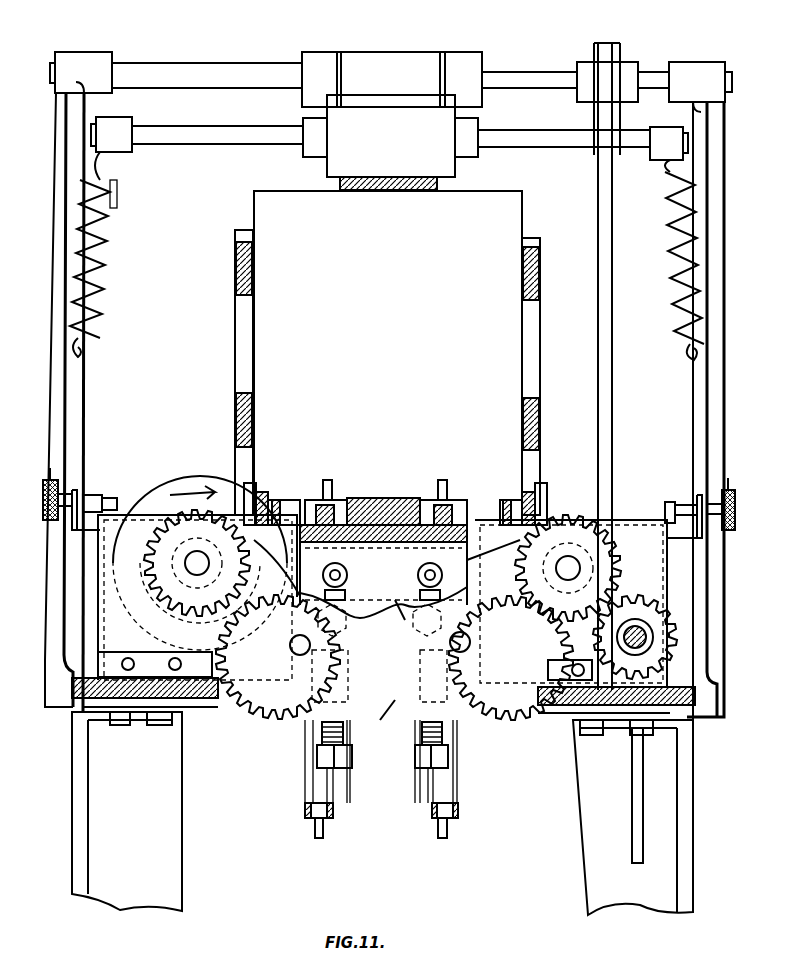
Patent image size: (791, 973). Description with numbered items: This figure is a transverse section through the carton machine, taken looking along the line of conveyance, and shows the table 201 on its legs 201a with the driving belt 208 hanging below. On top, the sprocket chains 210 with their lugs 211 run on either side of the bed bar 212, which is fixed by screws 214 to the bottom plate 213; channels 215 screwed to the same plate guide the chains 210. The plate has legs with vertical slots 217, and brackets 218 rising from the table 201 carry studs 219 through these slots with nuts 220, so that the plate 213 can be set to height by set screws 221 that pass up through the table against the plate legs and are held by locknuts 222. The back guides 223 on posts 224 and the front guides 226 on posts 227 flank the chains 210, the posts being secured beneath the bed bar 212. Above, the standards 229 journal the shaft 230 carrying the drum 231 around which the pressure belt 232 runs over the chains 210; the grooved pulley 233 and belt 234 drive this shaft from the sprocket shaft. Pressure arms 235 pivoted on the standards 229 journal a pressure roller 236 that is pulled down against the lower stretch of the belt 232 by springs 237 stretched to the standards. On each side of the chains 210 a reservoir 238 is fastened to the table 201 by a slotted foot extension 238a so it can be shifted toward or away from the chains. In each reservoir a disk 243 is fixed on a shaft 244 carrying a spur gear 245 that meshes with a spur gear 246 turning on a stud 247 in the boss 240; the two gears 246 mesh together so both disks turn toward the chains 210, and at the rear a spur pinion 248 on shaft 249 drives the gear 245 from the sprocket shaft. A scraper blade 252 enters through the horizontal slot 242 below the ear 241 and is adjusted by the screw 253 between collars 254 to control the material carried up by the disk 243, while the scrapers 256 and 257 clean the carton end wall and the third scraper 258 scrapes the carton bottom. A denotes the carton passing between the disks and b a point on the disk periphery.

The table 201 is at (160, 730).
The legs 201a is at (178, 828).
The belt 208 is at (630, 790).
The sprocket chains 210 is at (325, 500).
The lugs 211 is at (330, 480).
The bed bar 212 is at (410, 495).
The bottom plate 213 is at (345, 578).
The screws 214 is at (400, 495).
The channels 215 is at (410, 500).
The vertical slots 217 is at (395, 622).
The brackets 218 is at (383, 712).
The studs 219 is at (380, 600).
The nuts 220 is at (470, 560).
The set screws 221 is at (320, 762).
The locknuts 222 is at (350, 735).
The back guides 223 is at (540, 262).
The posts 224 is at (537, 320).
The front guides 226 is at (236, 270).
The posts 227 is at (236, 305).
The standards 229 is at (85, 410).
The shaft 230 is at (165, 70).
The drum 231 is at (430, 55).
The pressure belt 232 is at (340, 183).
The grooved pulley 233 is at (590, 106).
The belt 234 is at (615, 338).
The pressure arm 235 is at (125, 124).
The pressure roller 236 is at (325, 152).
The springs 237 is at (100, 235).
The reservoirs 238 is at (98, 597).
The foot extensions 238a is at (190, 700).
The boss 240 is at (332, 640).
The ear 241 is at (100, 495).
The horizontal slot 242 is at (70, 538).
The disk 243 is at (170, 480).
The shaft 244 is at (192, 568).
The spur gear 245 is at (158, 605).
The spur gear 246 is at (278, 735).
The stud 247 is at (293, 650).
The spur pinion 248 is at (675, 622).
The shaft 249 is at (650, 640).
The scraper blade 252 is at (118, 495).
The adjusting screw 253 is at (43, 500).
The collars 254 is at (50, 468).
The scraper 256 is at (258, 490).
The scraper 257 is at (262, 488).
The third scraper 258 is at (280, 498).
The box A is at (490, 192).
The point b is at (282, 500).